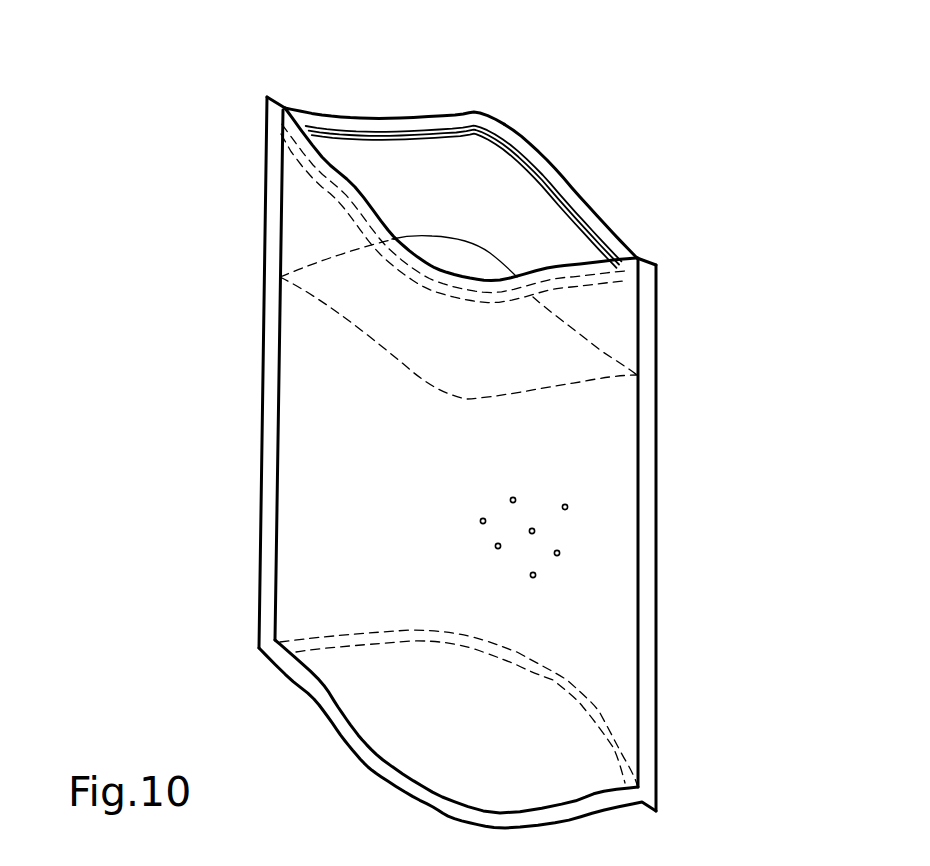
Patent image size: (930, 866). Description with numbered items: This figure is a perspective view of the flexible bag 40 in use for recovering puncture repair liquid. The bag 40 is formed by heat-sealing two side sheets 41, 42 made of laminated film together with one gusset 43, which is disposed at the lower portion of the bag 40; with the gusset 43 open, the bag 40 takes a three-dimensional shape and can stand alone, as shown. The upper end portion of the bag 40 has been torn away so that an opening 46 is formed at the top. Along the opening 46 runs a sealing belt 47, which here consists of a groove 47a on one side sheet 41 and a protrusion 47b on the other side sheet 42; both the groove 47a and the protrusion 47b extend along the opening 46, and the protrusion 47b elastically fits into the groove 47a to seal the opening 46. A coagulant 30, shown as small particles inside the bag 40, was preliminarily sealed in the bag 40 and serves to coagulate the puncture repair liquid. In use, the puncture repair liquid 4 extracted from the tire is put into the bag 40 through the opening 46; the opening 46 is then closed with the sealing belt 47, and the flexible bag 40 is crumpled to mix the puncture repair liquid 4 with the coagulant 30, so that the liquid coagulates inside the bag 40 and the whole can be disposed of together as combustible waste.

The bag 40 is at (668, 355).
The side sheet 41 is at (617, 655).
The side sheet 42 is at (571, 255).
The gusset 43 is at (532, 762).
The opening 46 is at (587, 189).
The sealing belt 47 is at (384, 122).
The groove 47a is at (337, 191).
The protrusion 47b is at (473, 131).
The puncture repair liquid 4 is at (463, 250).
The coagulant 30 is at (567, 506).